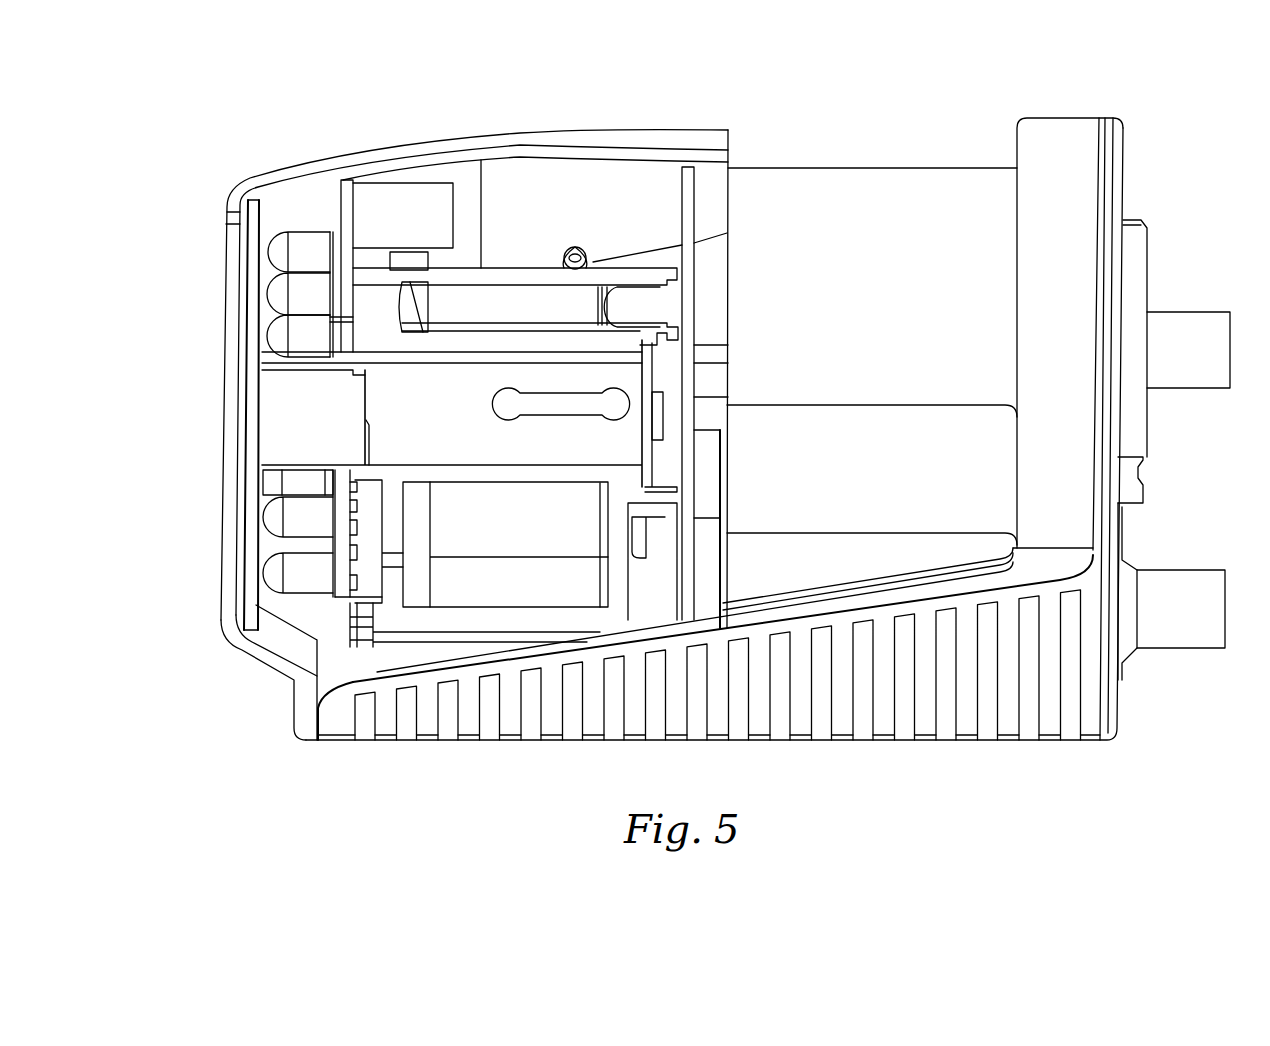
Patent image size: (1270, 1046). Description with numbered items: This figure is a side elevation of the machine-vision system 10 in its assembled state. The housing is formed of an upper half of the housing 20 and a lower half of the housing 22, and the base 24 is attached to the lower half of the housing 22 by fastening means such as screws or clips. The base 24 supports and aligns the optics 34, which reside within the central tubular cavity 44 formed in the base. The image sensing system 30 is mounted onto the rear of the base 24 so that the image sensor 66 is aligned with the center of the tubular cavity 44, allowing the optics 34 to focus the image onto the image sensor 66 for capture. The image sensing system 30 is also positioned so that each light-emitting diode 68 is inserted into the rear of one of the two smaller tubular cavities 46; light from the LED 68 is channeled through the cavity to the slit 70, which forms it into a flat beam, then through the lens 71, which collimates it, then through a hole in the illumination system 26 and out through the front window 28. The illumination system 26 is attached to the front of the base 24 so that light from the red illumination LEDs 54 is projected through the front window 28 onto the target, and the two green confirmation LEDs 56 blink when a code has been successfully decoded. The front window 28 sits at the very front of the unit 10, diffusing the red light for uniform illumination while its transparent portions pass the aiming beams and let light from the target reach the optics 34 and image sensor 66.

The machine-vision system 10 is at (855, 94).
The upper half of the housing 20 is at (940, 140).
The lower half of the housing 22 is at (1113, 698).
The base 24 is at (540, 279).
The illumination system 26 is at (341, 237).
The front window 28 is at (250, 597).
The image sensing system 30 is at (683, 165).
The optics 34 is at (514, 452).
The tubular cavity 44 is at (283, 425).
The tubular cavities 46 is at (577, 297).
The illumination LEDs 54 is at (296, 583).
The confirmation LEDs 56 is at (273, 515).
The image sensor 66 is at (660, 428).
The light-emitting diode 68 is at (652, 305).
The slit 70 is at (597, 300).
The lens 71 is at (430, 297).